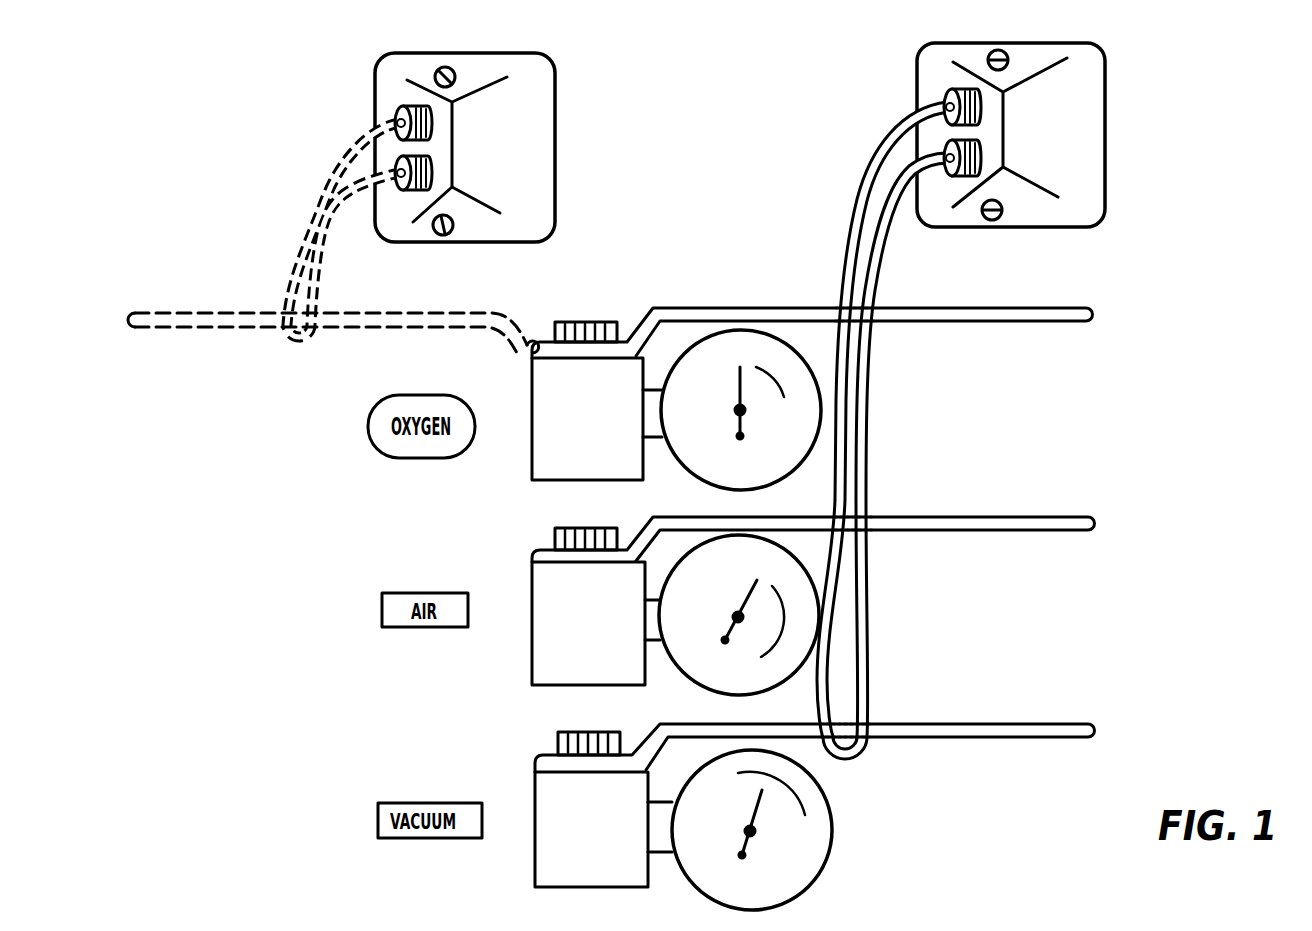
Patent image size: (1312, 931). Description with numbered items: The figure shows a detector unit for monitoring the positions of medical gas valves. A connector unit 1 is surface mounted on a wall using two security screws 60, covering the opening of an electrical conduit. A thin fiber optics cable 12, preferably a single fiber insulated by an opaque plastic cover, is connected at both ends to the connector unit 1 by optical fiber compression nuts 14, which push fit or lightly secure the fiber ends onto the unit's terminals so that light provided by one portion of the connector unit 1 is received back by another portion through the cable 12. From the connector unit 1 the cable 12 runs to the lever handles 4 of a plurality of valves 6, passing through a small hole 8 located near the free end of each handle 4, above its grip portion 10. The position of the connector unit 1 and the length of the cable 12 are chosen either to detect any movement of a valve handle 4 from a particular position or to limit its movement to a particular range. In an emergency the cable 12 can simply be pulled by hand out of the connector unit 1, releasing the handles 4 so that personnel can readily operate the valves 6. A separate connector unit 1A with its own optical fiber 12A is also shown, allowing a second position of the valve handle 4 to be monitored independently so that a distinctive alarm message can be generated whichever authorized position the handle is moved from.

The connector unit 1 is at (1047, 143).
The separate connector unit 1A is at (491, 158).
The lever handle 4 is at (961, 322).
The valve 6 is at (576, 421).
The small hole 8 is at (869, 517).
The grip portion 10 is at (1008, 523).
The fiber optics cable 12 is at (871, 160).
The optical fiber 12A is at (318, 300).
The optical fiber compression nuts 14 is at (942, 150).
The security screws 60 is at (450, 236).